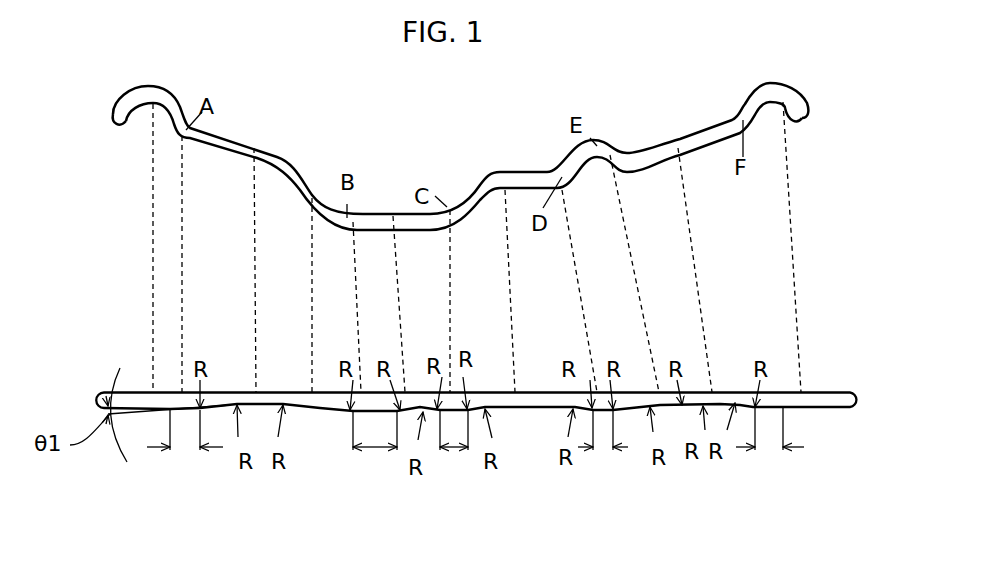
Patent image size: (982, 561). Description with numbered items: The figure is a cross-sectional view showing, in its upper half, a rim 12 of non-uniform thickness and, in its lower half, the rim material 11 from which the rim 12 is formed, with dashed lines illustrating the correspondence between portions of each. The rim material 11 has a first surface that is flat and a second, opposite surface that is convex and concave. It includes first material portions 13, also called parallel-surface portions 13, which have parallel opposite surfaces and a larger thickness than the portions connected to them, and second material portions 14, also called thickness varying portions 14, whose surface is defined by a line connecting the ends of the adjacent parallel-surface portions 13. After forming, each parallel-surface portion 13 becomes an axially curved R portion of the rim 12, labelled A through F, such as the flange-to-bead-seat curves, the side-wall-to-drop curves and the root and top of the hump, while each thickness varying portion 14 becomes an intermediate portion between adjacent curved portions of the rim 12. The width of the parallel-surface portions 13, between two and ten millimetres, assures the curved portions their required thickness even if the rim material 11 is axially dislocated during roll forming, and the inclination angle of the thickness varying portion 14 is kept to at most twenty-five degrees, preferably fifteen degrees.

The rim material 11 is at (840, 390).
The rim 12 is at (777, 83).
The first material portion (parallel-surface portion) 13 is at (187, 451).
The second material portion (thickness varying portion) 14 is at (487, 362).